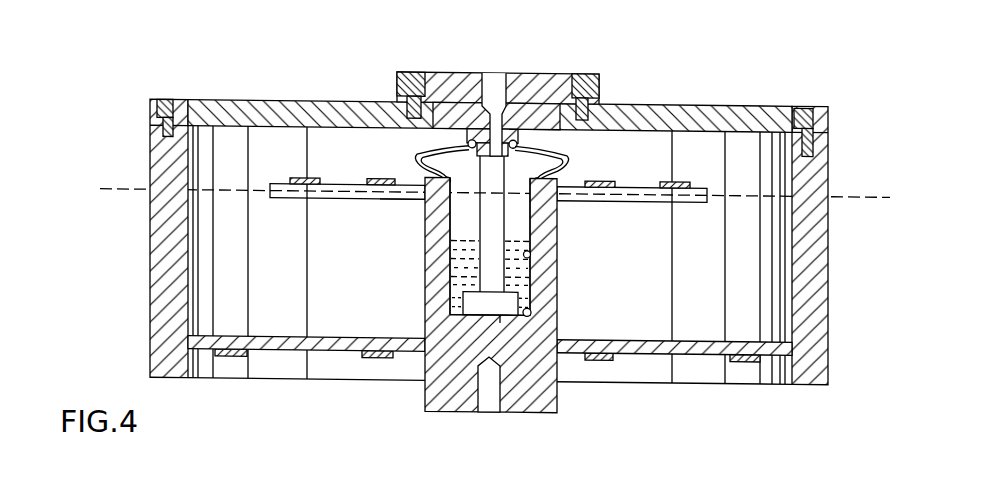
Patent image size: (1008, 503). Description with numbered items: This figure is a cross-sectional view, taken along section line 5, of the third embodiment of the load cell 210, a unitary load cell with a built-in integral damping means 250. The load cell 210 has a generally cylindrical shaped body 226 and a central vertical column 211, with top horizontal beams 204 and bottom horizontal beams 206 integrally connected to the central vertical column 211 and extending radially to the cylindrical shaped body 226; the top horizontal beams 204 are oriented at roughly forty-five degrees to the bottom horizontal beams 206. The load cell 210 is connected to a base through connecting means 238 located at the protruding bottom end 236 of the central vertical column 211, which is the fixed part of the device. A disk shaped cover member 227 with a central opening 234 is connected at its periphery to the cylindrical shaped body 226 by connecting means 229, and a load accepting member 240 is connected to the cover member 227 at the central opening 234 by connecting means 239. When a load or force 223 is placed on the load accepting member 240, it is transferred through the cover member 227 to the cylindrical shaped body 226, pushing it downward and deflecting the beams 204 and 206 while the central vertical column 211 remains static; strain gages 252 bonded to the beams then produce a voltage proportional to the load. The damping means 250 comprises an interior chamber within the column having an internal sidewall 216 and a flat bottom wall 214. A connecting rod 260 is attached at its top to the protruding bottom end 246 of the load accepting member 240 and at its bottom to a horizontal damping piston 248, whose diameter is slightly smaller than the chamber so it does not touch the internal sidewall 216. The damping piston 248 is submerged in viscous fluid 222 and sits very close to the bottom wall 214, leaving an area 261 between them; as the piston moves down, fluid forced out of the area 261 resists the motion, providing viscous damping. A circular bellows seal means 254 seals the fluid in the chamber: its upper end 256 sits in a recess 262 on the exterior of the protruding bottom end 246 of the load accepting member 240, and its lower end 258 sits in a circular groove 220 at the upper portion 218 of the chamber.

The section line 5 is at (100, 182).
The top horizontal beams 204 is at (272, 201).
The bottom horizontal beams 206 is at (297, 353).
The load cell 210 is at (505, 209).
The central vertical column 211 is at (547, 322).
The flat bottom wall 214 is at (528, 318).
The internal sidewall 216 is at (528, 257).
The upper portion 218 is at (393, 201).
The circular groove 220 is at (440, 238).
The viscous fluid 222 is at (461, 283).
The load or force 223 is at (506, 78).
The cylindrical shaped body 226 is at (840, 303).
The disk shaped cover member 227 is at (276, 101).
The connecting means 229 is at (168, 101).
The central opening 234 is at (443, 78).
The protruding bottom end 236 is at (440, 412).
The connecting means 238 is at (479, 396).
The connecting means 239 is at (405, 73).
The load accepting member 240 is at (558, 68).
The protruding bottom end 246 is at (533, 222).
The damping piston 248 is at (517, 297).
The damping means 250 is at (480, 320).
The strain gages 252 is at (377, 178).
The bellows seal means 254 is at (414, 158).
The upper end 256 is at (518, 78).
The lower end 258 is at (422, 176).
The connecting rod 260 is at (486, 262).
The area 261 is at (500, 320).
The recess 262 is at (521, 136).